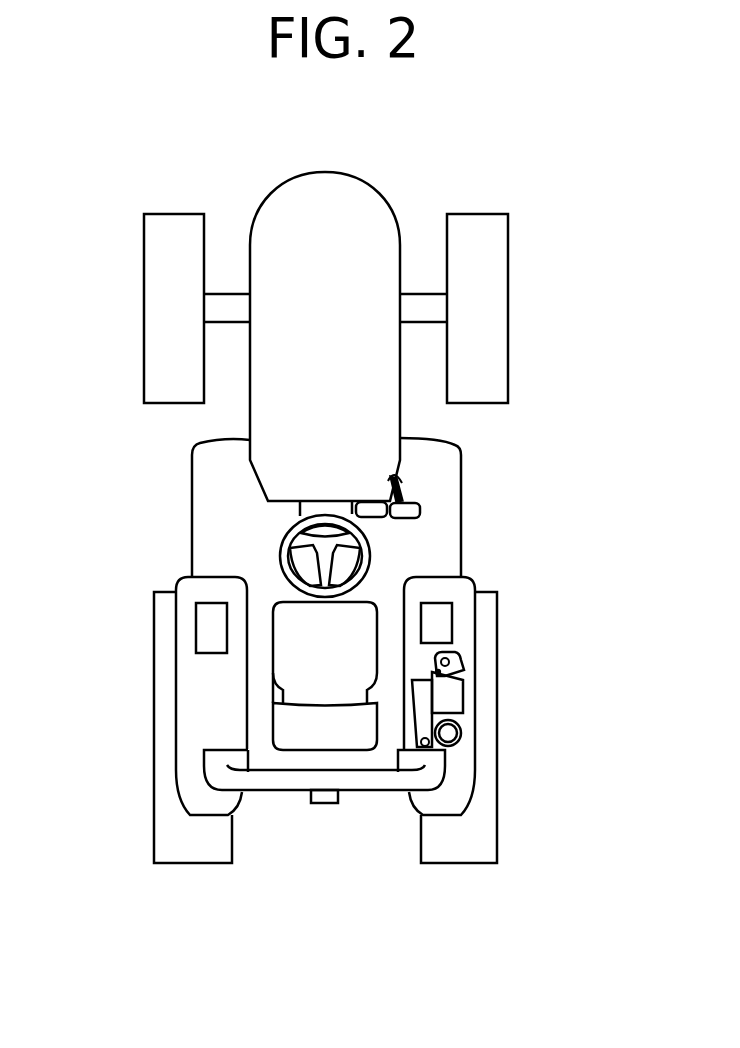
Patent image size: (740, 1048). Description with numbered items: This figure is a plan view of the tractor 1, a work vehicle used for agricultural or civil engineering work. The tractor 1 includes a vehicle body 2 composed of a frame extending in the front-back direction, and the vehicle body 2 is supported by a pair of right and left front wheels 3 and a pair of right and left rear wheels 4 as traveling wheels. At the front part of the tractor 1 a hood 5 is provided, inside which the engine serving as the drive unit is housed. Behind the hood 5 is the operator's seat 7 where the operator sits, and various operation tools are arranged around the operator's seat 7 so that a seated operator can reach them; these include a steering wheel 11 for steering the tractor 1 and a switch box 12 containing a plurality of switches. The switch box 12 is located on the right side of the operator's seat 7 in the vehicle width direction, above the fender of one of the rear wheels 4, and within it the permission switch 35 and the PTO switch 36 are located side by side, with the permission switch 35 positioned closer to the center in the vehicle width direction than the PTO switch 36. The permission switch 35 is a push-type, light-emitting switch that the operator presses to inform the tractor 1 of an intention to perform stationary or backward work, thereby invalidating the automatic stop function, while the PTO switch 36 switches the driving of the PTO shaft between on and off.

The tractor 1 is at (88, 225).
The vehicle body 2 is at (177, 538).
The front wheel 3 is at (498, 240).
The rear wheel 4 is at (487, 843).
The hood 5 is at (387, 397).
The operator's seat 7 is at (362, 642).
The steering wheel 11 is at (372, 553).
The switch box 12 is at (471, 708).
The permission switch 35 is at (460, 677).
The PTO switch 36 is at (452, 660).